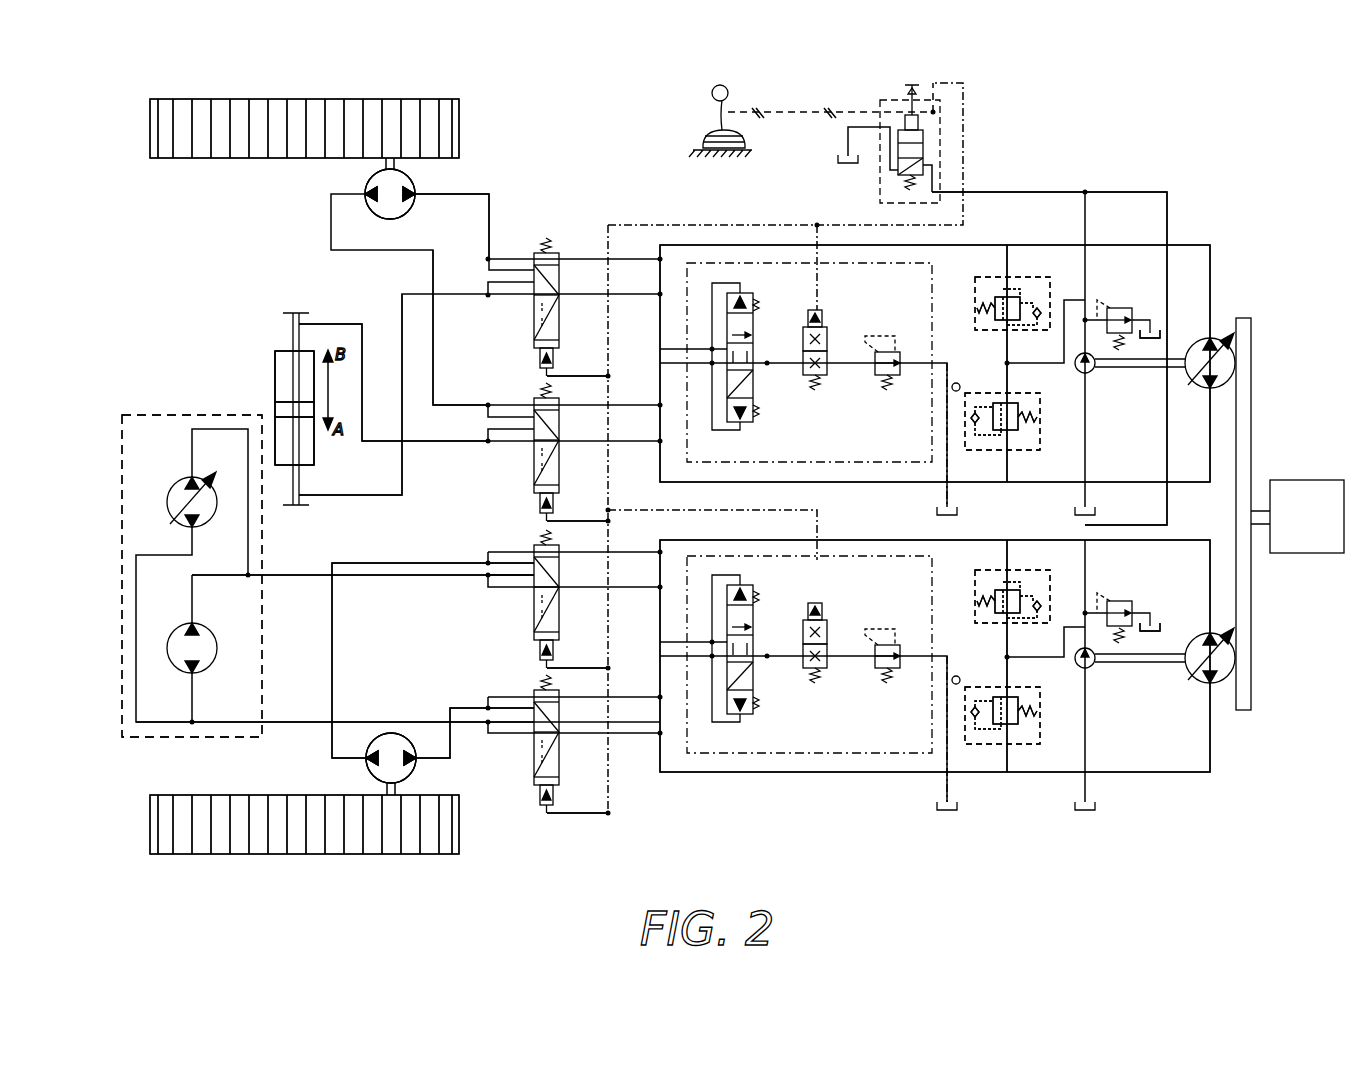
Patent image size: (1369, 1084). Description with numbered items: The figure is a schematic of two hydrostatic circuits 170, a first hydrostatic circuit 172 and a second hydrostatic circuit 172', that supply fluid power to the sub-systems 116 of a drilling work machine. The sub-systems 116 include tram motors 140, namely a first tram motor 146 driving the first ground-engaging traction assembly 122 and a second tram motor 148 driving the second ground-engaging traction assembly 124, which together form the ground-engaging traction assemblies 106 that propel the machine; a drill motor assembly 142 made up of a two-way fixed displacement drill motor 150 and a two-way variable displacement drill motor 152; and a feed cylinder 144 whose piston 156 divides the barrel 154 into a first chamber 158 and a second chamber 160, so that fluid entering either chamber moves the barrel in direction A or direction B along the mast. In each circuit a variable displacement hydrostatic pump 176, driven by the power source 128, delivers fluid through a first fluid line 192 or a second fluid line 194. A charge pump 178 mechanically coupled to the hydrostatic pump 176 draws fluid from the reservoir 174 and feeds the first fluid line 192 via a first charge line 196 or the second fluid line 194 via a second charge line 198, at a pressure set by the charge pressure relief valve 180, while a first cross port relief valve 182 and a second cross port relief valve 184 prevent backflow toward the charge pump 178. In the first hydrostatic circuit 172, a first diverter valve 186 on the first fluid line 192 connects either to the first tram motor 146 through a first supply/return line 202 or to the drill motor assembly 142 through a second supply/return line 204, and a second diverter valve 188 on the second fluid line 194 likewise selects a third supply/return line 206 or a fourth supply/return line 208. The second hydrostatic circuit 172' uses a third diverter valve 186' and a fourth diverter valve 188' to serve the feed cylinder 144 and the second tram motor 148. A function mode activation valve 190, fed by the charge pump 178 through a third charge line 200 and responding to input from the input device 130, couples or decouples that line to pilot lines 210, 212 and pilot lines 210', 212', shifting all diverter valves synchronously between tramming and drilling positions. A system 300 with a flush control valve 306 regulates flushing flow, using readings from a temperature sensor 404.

The ground-engaging traction assemblies 106 is at (272, 93).
The second ground-engaging traction assembly 124 is at (325, 100).
The first ground-engaging traction assembly 122 is at (330, 855).
The sub-systems 116 is at (365, 185).
The tram motors 140 is at (415, 182).
The second tram motor 148 is at (416, 190).
The first tram motor 146 is at (418, 770).
The feed cylinder 144 is at (273, 355).
The barrel 154 is at (296, 320).
The second chamber 160 is at (275, 382).
The piston 156 is at (280, 412).
The first chamber 158 is at (305, 440).
The drill motor assembly 142 is at (120, 470).
The two-way variable displacement drill motor 152 is at (185, 480).
The two-way fixed displacement drill motor 150 is at (217, 670).
The first supply/return line 202 is at (492, 222).
The second supply/return line 204 is at (345, 497).
The third supply/return line 206 is at (435, 406).
The fourth supply/return line 208 is at (365, 413).
The first diverter valve 186 is at (499, 599).
The third diverter valve 186' is at (584, 280).
The second diverter valve 188 is at (528, 766).
The fourth diverter valve 188' is at (499, 452).
The pilot line 210 is at (577, 638).
The pilot line 210' is at (579, 345).
The pilot line 212 is at (577, 844).
The pilot line 212' is at (579, 494).
The hydrostatic circuits 170 is at (1215, 243).
The first hydrostatic circuit 172 is at (935, 697).
The second hydrostatic circuit 172' is at (950, 325).
The system 300 is at (848, 466).
The flush control valve 306 is at (835, 328).
The temperature sensor 404 is at (958, 384).
The first fluid line 192 is at (1008, 244).
The first charge line 196 is at (1000, 278).
The first cross port relief valve 182 is at (1052, 290).
The second charge line 198 is at (1000, 455).
The second cross port relief valve 184 is at (1040, 440).
The charge pressure relief valve 180 is at (1120, 306).
The charge pump 178 is at (1090, 372).
The hydrostatic pump 176 is at (1237, 363).
The second fluid line 194 is at (1215, 440).
The power source 128 is at (1310, 480).
The reservoir 174 is at (845, 160).
The third charge line 200 is at (1055, 192).
The function mode activation valve 190 is at (880, 112).
The input device 130 is at (735, 95).